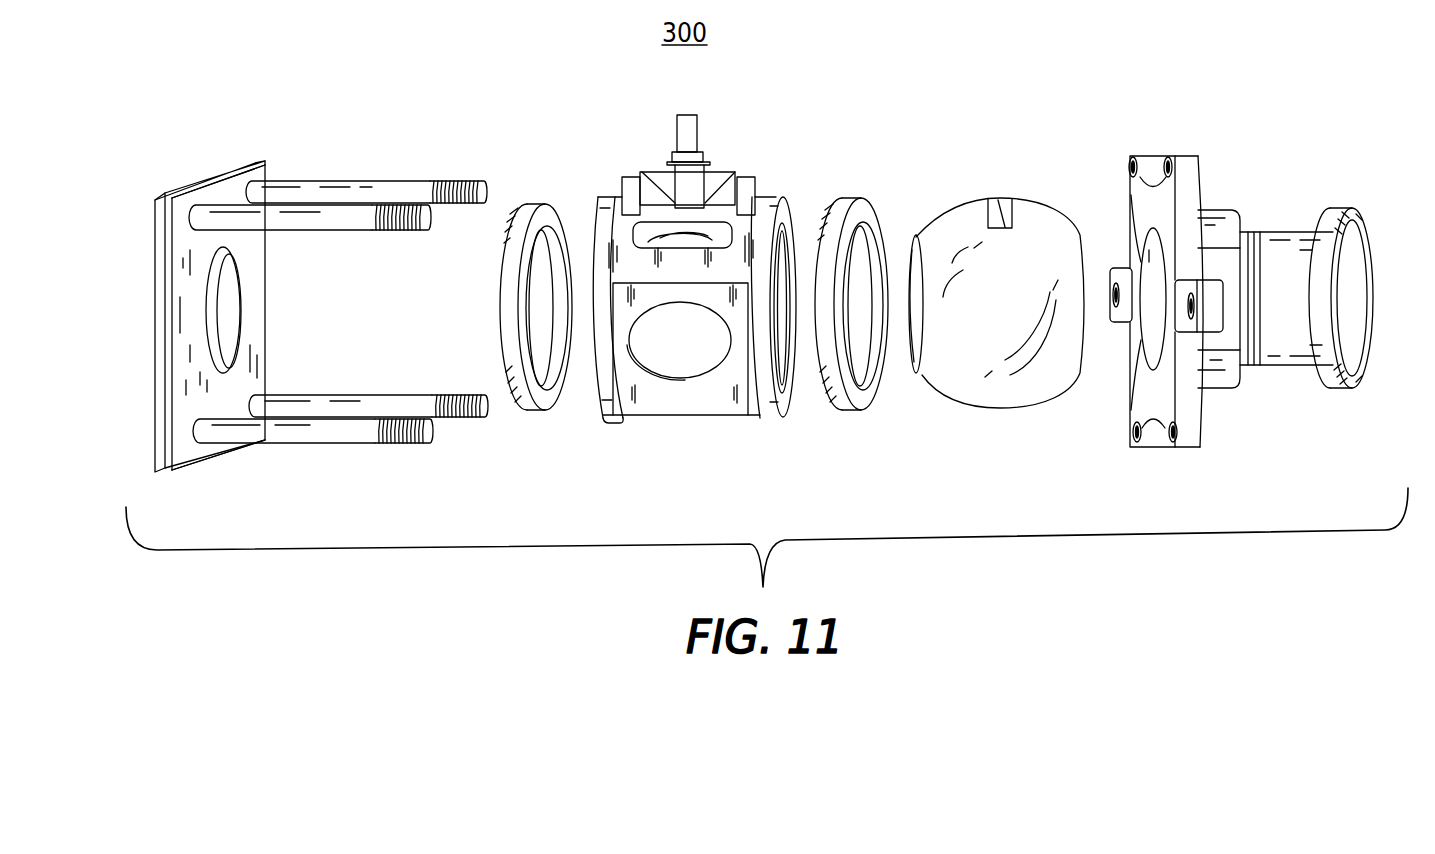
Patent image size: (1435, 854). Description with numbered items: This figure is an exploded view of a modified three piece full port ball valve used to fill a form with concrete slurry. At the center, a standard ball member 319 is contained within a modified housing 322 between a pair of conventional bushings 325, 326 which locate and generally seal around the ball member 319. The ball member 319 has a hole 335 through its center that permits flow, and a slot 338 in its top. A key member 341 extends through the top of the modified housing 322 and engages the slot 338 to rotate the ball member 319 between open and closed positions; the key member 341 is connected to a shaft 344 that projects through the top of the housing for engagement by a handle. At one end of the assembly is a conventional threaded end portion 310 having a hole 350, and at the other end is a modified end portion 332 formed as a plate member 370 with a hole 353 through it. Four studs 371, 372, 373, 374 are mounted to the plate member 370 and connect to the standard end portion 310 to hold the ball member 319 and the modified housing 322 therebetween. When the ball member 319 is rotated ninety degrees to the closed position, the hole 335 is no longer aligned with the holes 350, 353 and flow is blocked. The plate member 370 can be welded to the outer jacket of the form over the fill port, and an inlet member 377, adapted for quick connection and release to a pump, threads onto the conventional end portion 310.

The modified end portion 332 is at (217, 168).
The plate member 370 is at (252, 252).
The hole 353 is at (222, 308).
The stud 373 is at (300, 195).
The stud 374 is at (340, 217).
The stud 372 is at (363, 400).
The stud 371 is at (293, 432).
The bushing 325 is at (538, 200).
The modified housing 322 is at (688, 416).
The key member 341 is at (676, 232).
The shaft 344 is at (698, 132).
The bushing 326 is at (850, 198).
The ball member 319 is at (1000, 414).
The slot 338 is at (992, 200).
The hole 335 is at (920, 318).
The hole 350 is at (1127, 205).
The conventional end portion 310 is at (1203, 151).
The inlet member 377 is at (1337, 208).